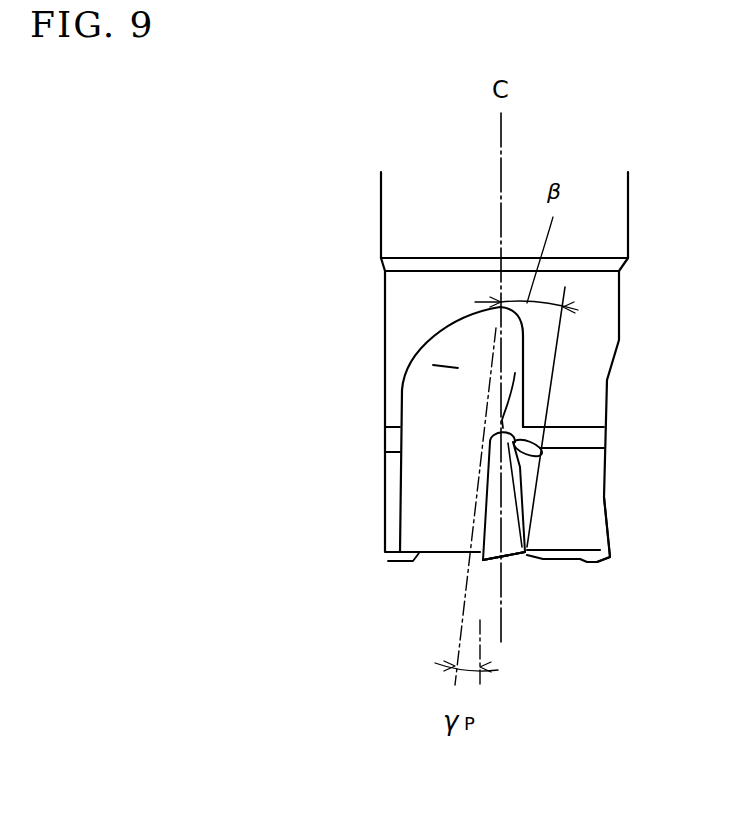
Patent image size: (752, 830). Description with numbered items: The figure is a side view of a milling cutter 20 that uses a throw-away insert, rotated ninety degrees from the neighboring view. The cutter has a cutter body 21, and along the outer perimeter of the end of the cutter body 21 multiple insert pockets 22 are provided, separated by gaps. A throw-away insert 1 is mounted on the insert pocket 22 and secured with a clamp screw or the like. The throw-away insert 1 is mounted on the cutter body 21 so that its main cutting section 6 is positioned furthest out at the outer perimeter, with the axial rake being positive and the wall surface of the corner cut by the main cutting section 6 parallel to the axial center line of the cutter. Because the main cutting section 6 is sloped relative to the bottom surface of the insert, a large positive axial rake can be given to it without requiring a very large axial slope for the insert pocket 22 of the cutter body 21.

The milling cutter 20 is at (634, 212).
The cutter body 21 is at (605, 322).
The insert pocket 22 is at (522, 497).
The throw-away insert 1 is at (513, 563).
The main cutting section 6 is at (493, 518).